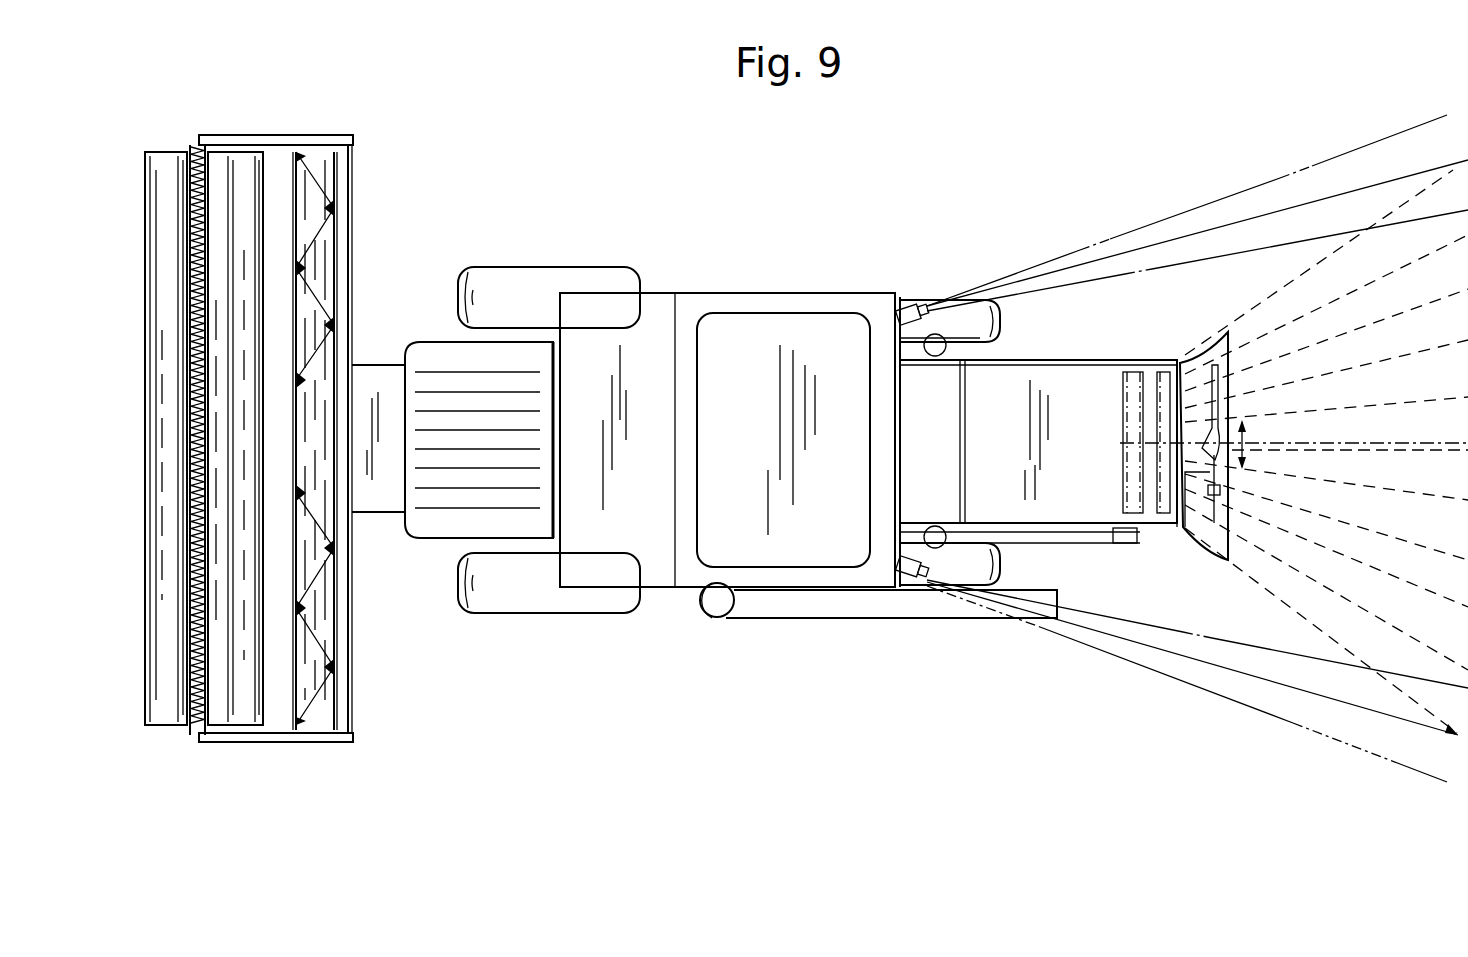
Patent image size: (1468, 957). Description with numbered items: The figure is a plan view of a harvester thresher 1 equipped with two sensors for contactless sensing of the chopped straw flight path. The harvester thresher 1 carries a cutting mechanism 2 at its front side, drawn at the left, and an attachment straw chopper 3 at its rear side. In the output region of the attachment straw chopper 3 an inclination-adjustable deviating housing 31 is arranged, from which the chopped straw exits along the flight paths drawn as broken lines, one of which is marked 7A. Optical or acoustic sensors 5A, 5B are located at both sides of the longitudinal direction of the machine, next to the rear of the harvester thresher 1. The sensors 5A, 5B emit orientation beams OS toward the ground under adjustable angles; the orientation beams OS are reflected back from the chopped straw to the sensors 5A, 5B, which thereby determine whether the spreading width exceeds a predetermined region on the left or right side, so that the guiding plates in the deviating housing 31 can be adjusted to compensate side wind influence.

The harvester thresher 1 is at (666, 272).
The cutting mechanism 2 is at (279, 128).
The attachment straw chopper 3 is at (1102, 434).
The sensor 5A is at (908, 588).
The sensor 5B is at (908, 300).
The spread pattern boundary 7A is at (1259, 586).
The deviating housing 31 is at (1193, 340).
The orientation beams OS is at (1257, 186).